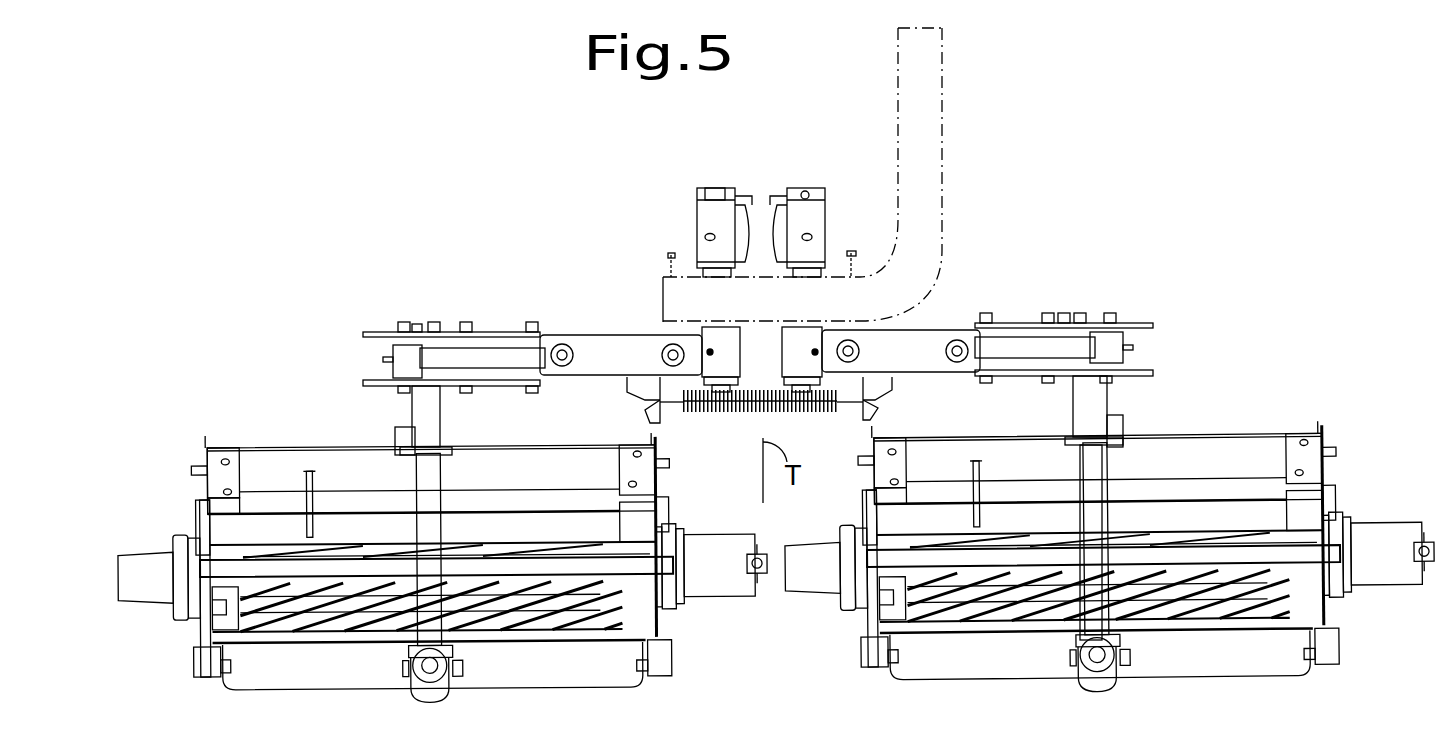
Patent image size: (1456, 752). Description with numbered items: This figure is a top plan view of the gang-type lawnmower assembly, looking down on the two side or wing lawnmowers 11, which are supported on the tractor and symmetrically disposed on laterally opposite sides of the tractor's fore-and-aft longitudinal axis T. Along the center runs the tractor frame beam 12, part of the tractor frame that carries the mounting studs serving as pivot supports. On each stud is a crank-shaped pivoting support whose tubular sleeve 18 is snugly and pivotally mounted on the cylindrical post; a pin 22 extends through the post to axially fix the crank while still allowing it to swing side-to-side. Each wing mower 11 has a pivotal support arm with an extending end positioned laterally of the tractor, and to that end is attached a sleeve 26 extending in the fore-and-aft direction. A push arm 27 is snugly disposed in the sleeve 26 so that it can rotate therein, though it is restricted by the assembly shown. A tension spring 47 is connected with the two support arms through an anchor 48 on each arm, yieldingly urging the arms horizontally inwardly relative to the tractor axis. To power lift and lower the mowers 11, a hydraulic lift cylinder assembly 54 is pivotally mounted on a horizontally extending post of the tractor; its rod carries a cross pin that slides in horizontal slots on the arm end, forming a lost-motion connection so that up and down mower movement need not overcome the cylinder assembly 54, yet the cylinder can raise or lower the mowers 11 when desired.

The lawnmowers 11 is at (864, 674).
The tractor frame beam 12 is at (930, 211).
The tubular sleeve 18 is at (722, 218).
The pin 22 is at (807, 192).
The sleeve 26 is at (1093, 410).
The push arm 27 is at (1092, 472).
The tension spring 47 is at (748, 413).
The anchor 48 is at (640, 398).
The hydraulic lift cylinder assembly 54 is at (610, 352).